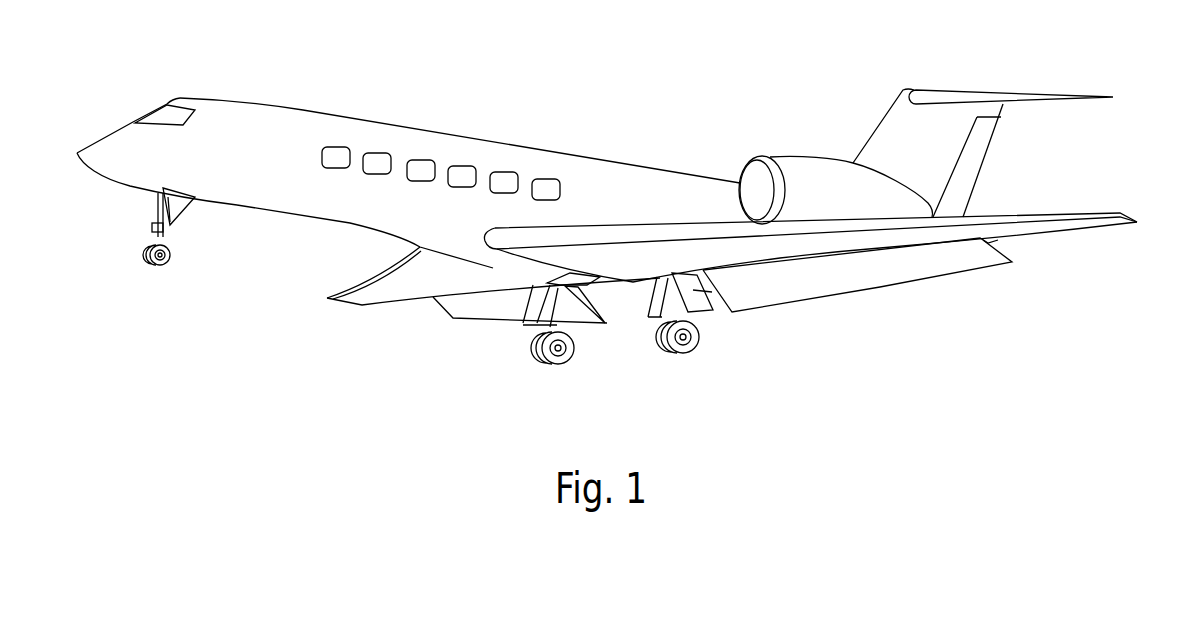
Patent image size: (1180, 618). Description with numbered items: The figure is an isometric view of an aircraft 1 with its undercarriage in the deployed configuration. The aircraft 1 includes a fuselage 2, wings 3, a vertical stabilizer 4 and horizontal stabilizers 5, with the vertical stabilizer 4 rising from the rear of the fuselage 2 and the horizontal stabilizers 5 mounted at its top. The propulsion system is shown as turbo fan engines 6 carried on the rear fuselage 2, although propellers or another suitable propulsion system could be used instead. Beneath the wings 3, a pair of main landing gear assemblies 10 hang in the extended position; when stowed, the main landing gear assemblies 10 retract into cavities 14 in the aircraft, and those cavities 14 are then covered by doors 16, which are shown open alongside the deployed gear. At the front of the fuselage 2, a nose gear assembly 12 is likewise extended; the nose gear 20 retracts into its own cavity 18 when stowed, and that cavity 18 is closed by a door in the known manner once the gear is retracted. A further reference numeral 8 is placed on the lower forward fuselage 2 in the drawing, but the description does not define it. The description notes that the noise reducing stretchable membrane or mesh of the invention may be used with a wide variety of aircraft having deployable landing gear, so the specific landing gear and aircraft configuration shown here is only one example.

The aircraft 1 is at (511, 139).
The fuselage 2 is at (322, 112).
The wings 3 is at (350, 305).
The vertical stabilizer 4 is at (877, 142).
The horizontal stabilizers 5 is at (1053, 90).
The turbo fan engines 6 is at (787, 158).
The fuselage belly fairing 8 is at (343, 230).
The main landing gear assemblies 10 is at (518, 360).
The nose gear assembly 12 is at (148, 272).
The cavities 14 is at (580, 279).
The doors 16 is at (520, 332).
The cavity 18 is at (158, 202).
The nose gear 20 is at (180, 213).